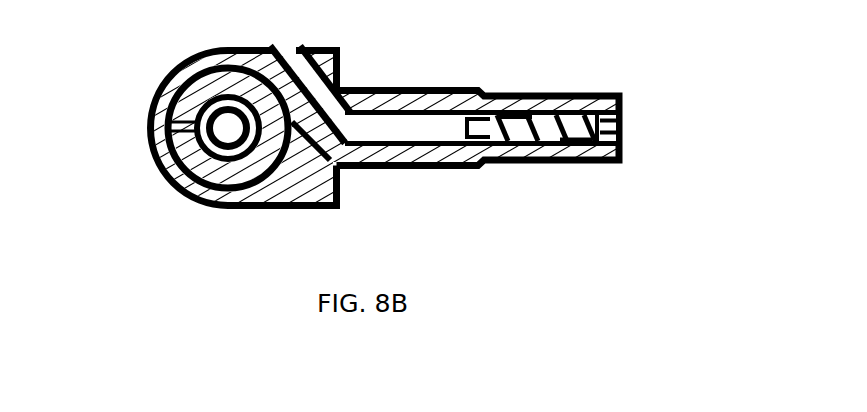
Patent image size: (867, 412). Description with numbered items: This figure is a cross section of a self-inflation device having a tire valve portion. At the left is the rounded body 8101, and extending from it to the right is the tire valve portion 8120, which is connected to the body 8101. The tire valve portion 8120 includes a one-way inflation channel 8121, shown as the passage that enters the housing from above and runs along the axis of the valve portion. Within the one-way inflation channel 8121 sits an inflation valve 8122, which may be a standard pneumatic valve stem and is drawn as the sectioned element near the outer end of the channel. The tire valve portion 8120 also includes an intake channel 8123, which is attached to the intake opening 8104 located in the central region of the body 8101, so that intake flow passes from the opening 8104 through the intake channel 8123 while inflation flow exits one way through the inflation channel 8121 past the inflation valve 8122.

The body 8101 is at (212, 76).
The intake opening 8104 is at (156, 122).
The tire valve portion 8120 is at (442, 179).
The one-way inflation channel 8121 is at (416, 116).
The inflation valve 8122 is at (546, 114).
The intake channel 8123 is at (317, 157).